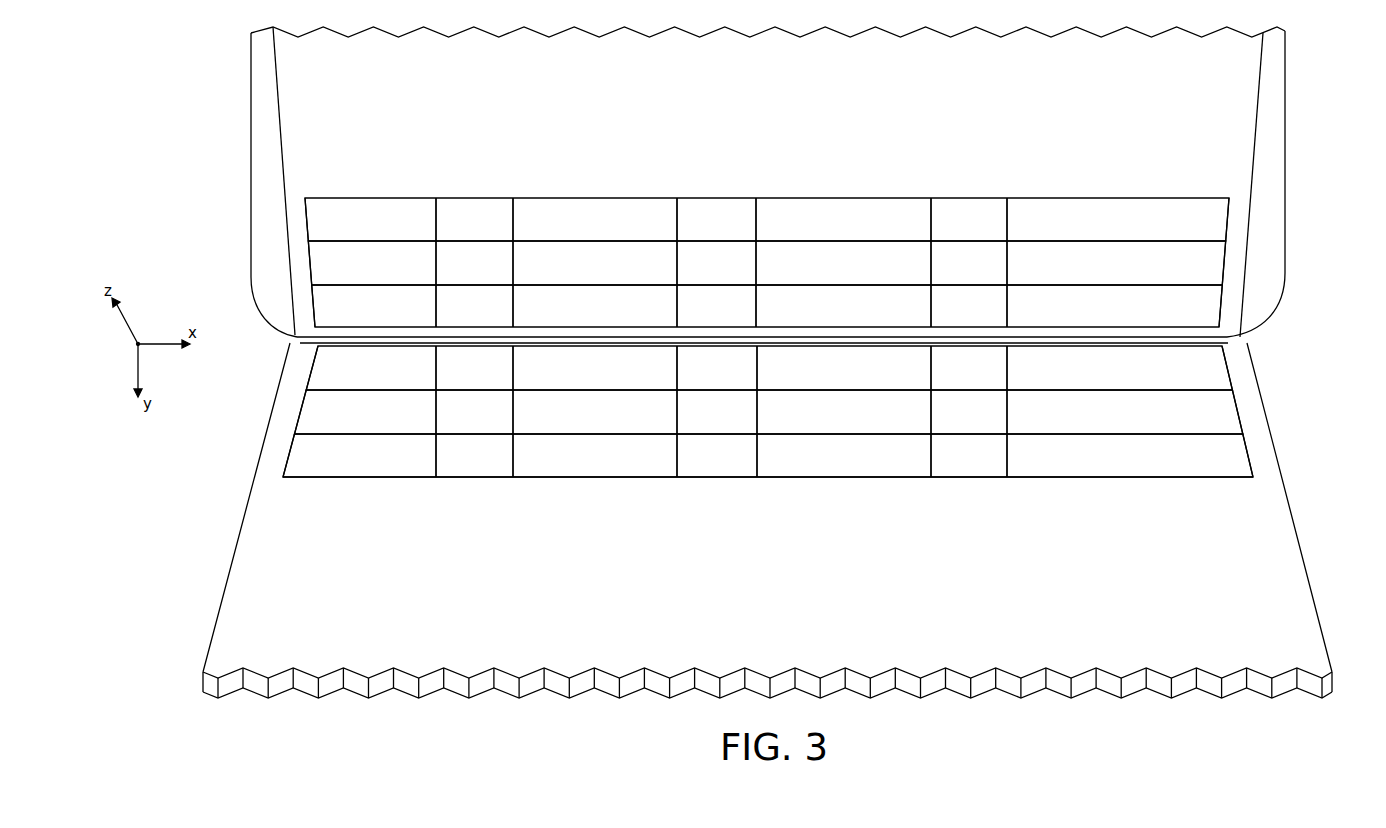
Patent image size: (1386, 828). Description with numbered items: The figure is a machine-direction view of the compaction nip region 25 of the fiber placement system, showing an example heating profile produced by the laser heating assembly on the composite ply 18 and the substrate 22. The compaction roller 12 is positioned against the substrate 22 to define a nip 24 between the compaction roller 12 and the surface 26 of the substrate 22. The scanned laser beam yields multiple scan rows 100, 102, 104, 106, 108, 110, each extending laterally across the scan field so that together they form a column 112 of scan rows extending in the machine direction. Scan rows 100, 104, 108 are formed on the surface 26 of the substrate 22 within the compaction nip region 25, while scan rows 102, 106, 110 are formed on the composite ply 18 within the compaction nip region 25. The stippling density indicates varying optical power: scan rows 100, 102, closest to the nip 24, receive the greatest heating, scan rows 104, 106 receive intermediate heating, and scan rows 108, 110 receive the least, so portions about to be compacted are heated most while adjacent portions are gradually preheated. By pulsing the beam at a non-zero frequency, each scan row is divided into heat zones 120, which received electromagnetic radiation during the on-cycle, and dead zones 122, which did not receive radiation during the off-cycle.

The compaction roller 12 is at (1275, 130).
The composite ply 18 is at (1238, 158).
The substrate 22 is at (1278, 548).
The nip 24 is at (1225, 343).
The compaction nip region 25 is at (1277, 258).
The surface 26 is at (1208, 623).
The scan row 100 is at (1228, 378).
The scan row 102 is at (1222, 300).
The scan row 104 is at (1240, 415).
The scan row 106 is at (1225, 257).
The scan row 108 is at (1248, 455).
The scan row 110 is at (1232, 207).
The column 112 is at (292, 148).
The heat zone 120 is at (376, 210).
The dead zone 122 is at (474, 210).